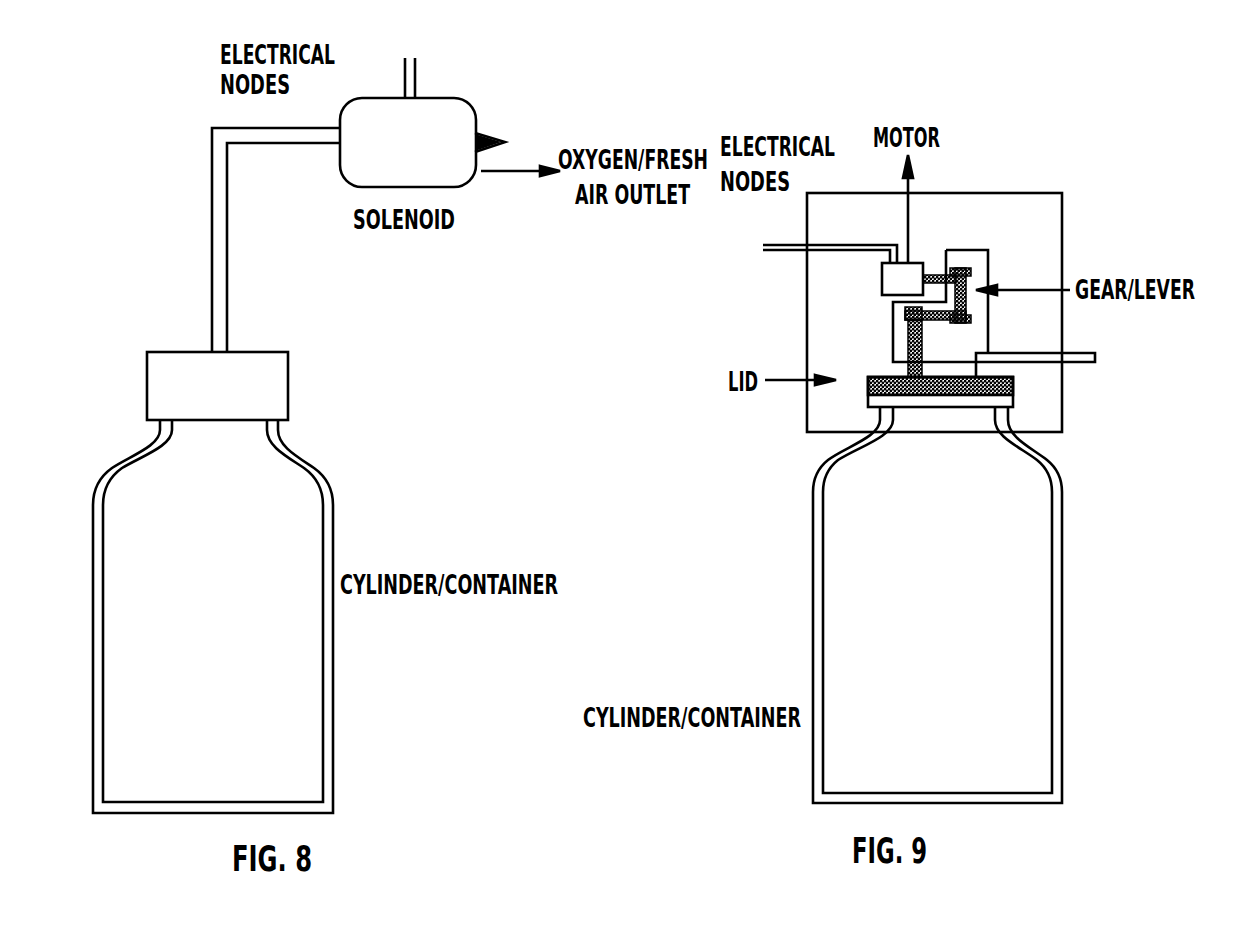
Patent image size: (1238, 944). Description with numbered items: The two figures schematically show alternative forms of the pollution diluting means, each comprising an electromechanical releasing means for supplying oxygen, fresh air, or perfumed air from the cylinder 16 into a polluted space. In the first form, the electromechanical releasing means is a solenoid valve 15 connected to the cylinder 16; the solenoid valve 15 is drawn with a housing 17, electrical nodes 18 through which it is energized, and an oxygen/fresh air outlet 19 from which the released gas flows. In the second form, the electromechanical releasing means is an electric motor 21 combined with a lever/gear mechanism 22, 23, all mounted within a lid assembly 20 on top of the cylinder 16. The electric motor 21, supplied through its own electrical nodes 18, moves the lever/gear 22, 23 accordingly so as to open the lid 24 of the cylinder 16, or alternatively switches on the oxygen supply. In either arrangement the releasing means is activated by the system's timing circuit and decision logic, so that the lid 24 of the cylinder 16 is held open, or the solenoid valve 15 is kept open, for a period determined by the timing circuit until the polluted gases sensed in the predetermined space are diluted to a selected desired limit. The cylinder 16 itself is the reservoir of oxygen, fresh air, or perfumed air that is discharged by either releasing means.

In FIG. 8, the solenoid valve 15 is at (311, 259).
In FIG. 8, the cylinder 16 is at (213, 616).
In FIG. 9, the cylinder 16 is at (937, 605).
In FIG. 8, the solenoid housing 17 is at (468, 101).
In FIG. 8, the electrical nodes 18 is at (404, 69).
In FIG. 9, the electrical nodes 18 is at (780, 243).
In FIG. 8, the oxygen/fresh air outlet nozzle 19 is at (505, 140).
In FIG. 9, the lid 20 is at (1030, 193).
In FIG. 9, the electric motor 21 is at (882, 279).
In FIG. 9, the lever/gear 22 is at (982, 261).
In FIG. 9, the lever/gear 23 is at (925, 331).
In FIG. 9, the lid 24 is at (1090, 407).